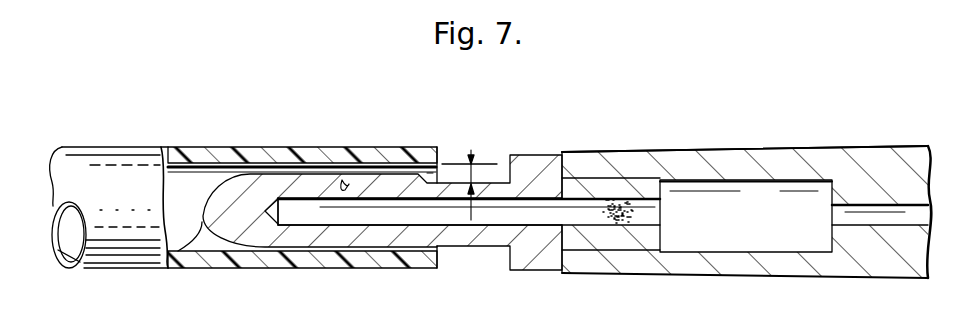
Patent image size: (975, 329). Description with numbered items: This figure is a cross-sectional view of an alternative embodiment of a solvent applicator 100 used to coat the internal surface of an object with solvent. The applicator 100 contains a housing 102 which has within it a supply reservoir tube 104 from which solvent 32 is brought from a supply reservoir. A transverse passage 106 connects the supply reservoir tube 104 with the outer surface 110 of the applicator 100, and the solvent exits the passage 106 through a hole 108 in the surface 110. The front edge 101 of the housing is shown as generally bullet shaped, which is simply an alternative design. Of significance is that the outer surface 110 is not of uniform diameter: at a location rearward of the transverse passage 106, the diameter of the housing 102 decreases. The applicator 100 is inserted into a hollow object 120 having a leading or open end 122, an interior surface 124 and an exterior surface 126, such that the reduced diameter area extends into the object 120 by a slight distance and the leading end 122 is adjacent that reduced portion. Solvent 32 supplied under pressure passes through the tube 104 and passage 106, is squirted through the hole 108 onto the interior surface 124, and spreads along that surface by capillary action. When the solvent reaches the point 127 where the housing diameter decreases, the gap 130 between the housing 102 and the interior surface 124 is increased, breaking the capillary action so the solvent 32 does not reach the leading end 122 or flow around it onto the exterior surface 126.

The solvent applicator 100 is at (572, 140).
The front edge 101 is at (168, 270).
The housing 102 is at (423, 266).
The supply reservoir tube 104 is at (535, 223).
The transverse passage 106 is at (336, 177).
The hole 108 is at (342, 193).
The outer surface 110 is at (388, 165).
The object 120 is at (178, 147).
The leading or open end 122 is at (445, 150).
The interior surface 124 is at (213, 249).
The exterior surface 126 is at (258, 260).
The point 127 is at (421, 238).
The gap 130 is at (472, 150).
The solvent 32 is at (618, 195).